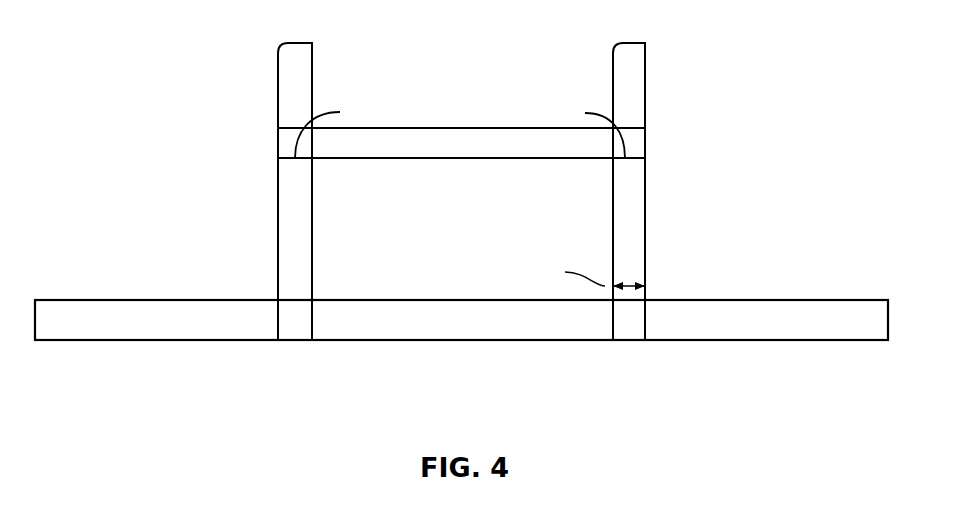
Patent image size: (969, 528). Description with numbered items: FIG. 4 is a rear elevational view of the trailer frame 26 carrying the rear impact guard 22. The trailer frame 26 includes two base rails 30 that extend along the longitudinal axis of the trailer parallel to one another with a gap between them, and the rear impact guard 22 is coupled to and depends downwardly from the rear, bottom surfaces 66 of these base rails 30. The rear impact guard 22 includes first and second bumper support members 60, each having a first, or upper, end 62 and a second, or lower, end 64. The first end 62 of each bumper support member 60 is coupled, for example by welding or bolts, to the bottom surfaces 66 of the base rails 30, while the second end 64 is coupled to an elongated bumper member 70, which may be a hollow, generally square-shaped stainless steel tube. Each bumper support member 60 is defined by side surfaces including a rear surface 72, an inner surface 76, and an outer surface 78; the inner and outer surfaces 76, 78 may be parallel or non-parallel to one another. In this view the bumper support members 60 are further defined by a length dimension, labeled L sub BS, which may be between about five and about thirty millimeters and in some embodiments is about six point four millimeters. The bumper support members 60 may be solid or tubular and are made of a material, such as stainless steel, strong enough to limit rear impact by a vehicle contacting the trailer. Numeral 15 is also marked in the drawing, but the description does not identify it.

The post / leg 15 is at (604, 77).
The rear impact guard 22 is at (120, 230).
The trailer frame 26 is at (448, 82).
The base rails 30 is at (437, 186).
The bumper support members 60 is at (312, 259).
The first end 62 is at (278, 178).
The second end 64 is at (278, 288).
The bottom surfaces 66 is at (340, 112).
The bumper member 70 is at (485, 330).
The rear surface 72 is at (303, 288).
The inner surface 76 is at (312, 208).
The outer surface 78 is at (278, 218).